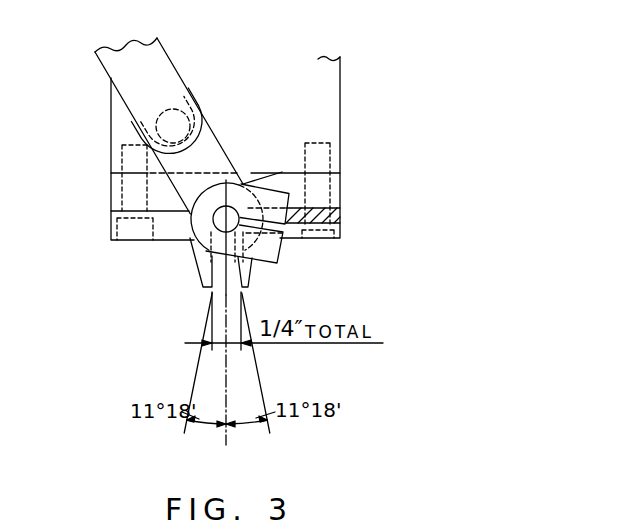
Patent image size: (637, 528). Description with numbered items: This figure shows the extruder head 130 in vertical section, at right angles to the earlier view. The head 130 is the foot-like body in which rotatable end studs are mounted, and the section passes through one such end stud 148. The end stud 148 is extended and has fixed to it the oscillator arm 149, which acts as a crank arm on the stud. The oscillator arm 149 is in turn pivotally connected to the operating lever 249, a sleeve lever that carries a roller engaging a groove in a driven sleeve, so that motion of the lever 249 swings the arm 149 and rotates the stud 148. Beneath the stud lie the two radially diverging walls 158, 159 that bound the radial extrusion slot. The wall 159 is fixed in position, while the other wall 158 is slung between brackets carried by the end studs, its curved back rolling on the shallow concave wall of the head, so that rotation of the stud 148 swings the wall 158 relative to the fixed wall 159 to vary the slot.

The extruder head 130 is at (342, 112).
The operating lever 249 is at (170, 59).
The oscillator arm 149 is at (216, 137).
The end stud 148 is at (213, 222).
The fixed wall 159 is at (197, 263).
The movable wall 158 is at (253, 273).